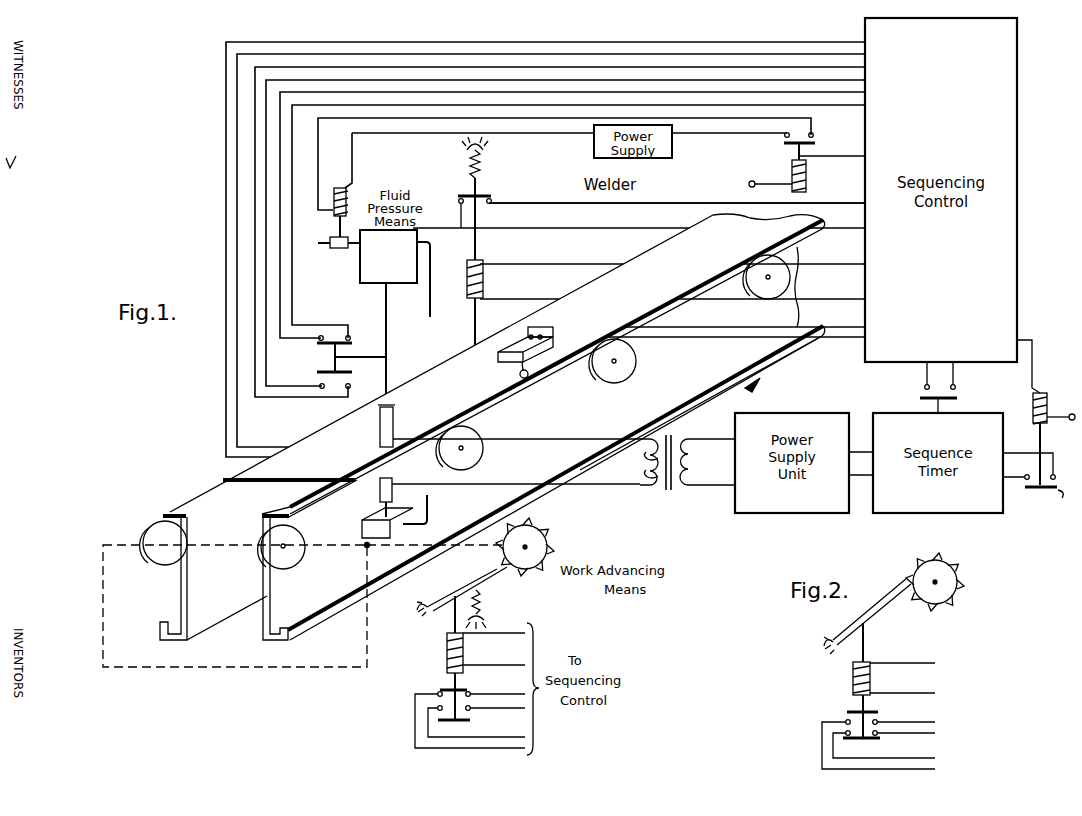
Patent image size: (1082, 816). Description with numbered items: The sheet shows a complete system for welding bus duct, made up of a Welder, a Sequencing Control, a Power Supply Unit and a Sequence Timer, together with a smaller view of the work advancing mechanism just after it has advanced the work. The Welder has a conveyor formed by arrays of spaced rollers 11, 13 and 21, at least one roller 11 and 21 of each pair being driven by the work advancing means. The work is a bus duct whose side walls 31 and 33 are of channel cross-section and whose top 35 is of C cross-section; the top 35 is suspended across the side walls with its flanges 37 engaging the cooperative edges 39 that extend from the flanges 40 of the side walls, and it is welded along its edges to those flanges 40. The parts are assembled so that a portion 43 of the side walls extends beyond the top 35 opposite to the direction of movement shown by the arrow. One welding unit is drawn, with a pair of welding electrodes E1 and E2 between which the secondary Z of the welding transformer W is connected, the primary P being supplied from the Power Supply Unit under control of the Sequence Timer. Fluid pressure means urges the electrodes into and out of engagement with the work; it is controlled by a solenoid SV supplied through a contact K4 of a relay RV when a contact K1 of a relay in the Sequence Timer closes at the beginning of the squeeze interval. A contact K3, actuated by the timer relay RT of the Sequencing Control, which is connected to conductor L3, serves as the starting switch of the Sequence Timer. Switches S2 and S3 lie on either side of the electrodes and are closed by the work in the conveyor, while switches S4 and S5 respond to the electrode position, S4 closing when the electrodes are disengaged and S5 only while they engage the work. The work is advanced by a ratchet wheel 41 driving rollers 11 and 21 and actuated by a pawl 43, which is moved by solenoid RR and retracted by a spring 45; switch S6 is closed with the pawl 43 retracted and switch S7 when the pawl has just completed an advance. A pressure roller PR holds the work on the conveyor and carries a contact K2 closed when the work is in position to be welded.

In FIG. 1, the roller 11 is at (262, 566).
In FIG. 1, the rollers 13 is at (630, 370).
In FIG. 1, the roller 21 is at (147, 540).
In FIG. 1, the side wall 31 is at (318, 600).
In FIG. 1, the side wall 33 is at (181, 608).
In FIG. 1, the top 35 is at (243, 472).
In FIG. 1, the flanges 37 is at (392, 462).
In FIG. 1, the cooperative edges 39 is at (170, 515).
In FIG. 1, the flanges 40 is at (196, 511).
In FIG. 1, the ratchet wheel 41 is at (548, 543).
In FIG. 2, the ratchet wheel 41 is at (958, 579).
In FIG. 1, the pawl 43 is at (213, 618).
In FIG. 2, the pawl 43 is at (890, 601).
In FIG. 1, the spring 45 is at (482, 608).
In FIG. 1, the switch S2 is at (322, 462).
In FIG. 1, the switch S3 is at (532, 343).
In FIG. 1, the switch S4 is at (318, 343).
In FIG. 1, the switch S5 is at (318, 373).
In FIG. 1, the switch S6 is at (470, 691).
In FIG. 2, the switch S6 is at (880, 716).
In FIG. 1, the switch S7 is at (470, 712).
In FIG. 2, the switch S7 is at (880, 739).
In FIG. 1, the solenoid SV is at (564, 183).
In FIG. 1, the welding electrode E1 is at (395, 418).
In FIG. 1, the welding electrode E2 is at (380, 491).
In FIG. 1, the contact K1 is at (920, 395).
In FIG. 1, the contact K2 is at (491, 199).
In FIG. 1, the contact K3 is at (1034, 484).
In FIG. 1, the contact K4 is at (811, 135).
In FIG. 1, the relay RV is at (811, 167).
In FIG. 1, the relay RT is at (1041, 412).
In FIG. 1, the conductor L3 is at (908, 292).
In FIG. 1, the pressure roller PR is at (478, 332).
In FIG. 1, the solenoid RR is at (471, 658).
In FIG. 2, the solenoid RR is at (878, 680).
In FIG. 1, the secondary Z is at (646, 490).
In FIG. 1, the welding transformer W is at (668, 505).
In FIG. 1, the primary P is at (680, 487).